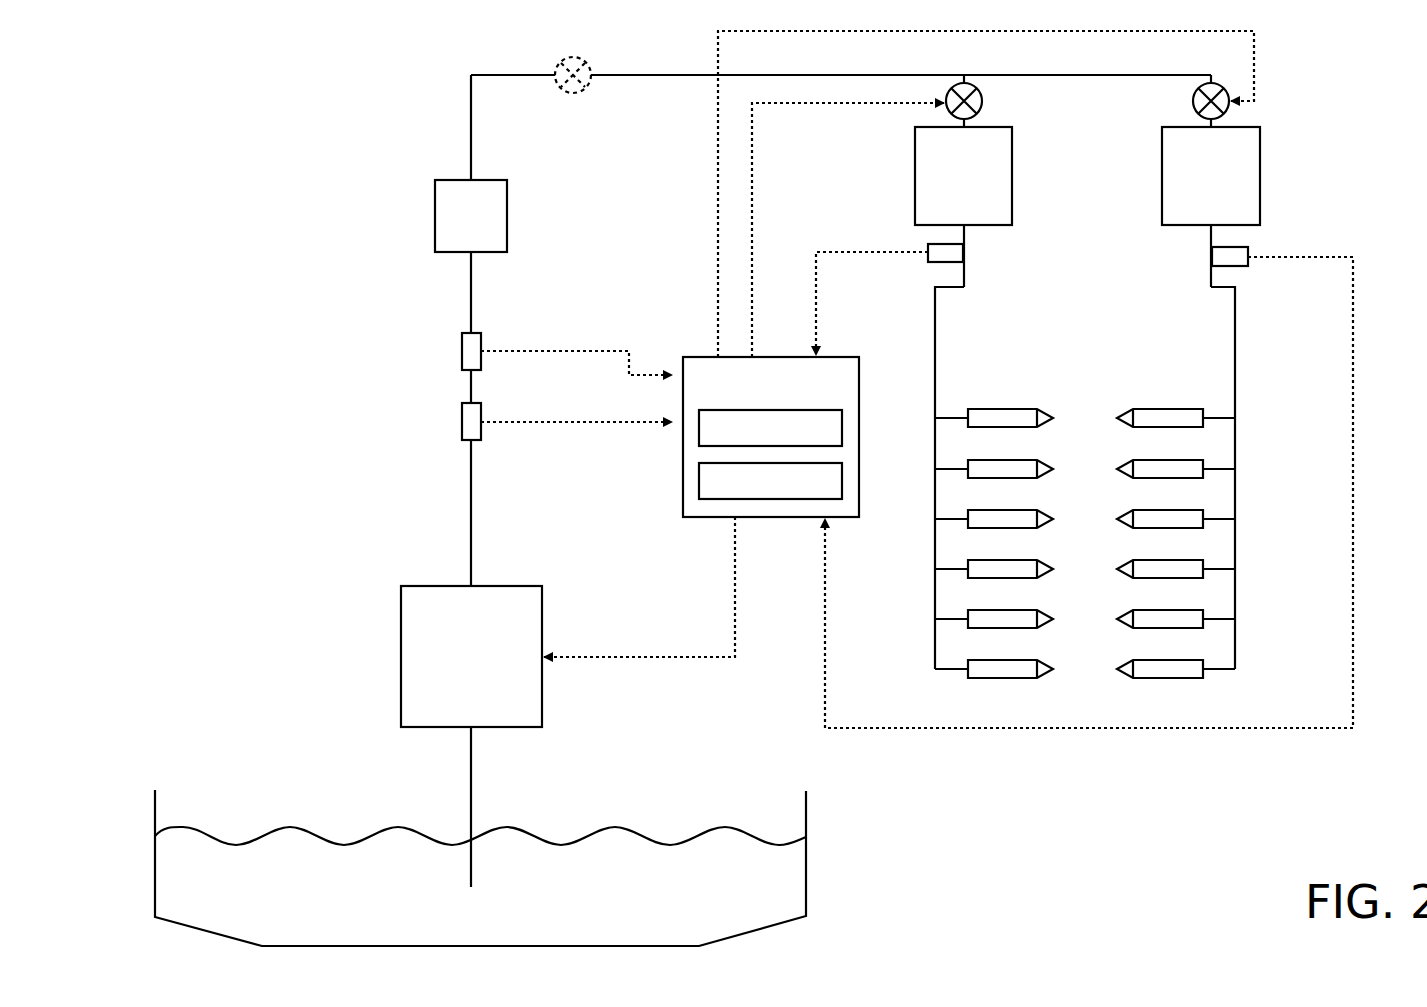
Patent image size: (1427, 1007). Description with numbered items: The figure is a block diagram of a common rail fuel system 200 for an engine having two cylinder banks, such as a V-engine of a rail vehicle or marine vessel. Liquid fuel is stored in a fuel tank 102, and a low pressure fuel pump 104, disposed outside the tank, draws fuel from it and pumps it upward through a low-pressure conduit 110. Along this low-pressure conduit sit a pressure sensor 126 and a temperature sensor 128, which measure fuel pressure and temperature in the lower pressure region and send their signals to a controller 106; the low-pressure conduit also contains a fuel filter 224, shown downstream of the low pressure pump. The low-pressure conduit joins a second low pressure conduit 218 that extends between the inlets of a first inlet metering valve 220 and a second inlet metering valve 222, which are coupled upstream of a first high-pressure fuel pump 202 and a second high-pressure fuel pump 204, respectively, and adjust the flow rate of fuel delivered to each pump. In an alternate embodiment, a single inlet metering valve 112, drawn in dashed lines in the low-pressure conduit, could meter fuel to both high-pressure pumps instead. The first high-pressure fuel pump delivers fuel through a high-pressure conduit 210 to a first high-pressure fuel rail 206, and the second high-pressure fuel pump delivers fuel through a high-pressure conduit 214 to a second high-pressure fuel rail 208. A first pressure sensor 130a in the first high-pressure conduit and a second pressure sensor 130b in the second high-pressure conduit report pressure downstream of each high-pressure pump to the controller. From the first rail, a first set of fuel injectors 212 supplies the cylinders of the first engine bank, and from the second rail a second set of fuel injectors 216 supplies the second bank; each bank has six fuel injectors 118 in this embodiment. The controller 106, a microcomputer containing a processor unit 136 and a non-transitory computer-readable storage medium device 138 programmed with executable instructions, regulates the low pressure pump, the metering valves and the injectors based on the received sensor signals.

The common rail fuel system 200 is at (1316, 90).
The fuel tank 102 is at (155, 870).
The low pressure fuel pump 104 is at (471, 656).
The controller 106 is at (948, 379).
The low-pressure conduit 110 is at (471, 532).
The single inlet metering valve 112 is at (576, 95).
The fuel injectors 118 is at (1015, 409).
The pressure sensor 126 is at (478, 403).
The temperature sensor 128 is at (478, 333).
The first pressure sensor 130a is at (930, 246).
The second pressure sensor 130b is at (1243, 249).
The processor unit 136 is at (770, 428).
The non-transitory computer-readable storage medium device 138 is at (770, 481).
The first high-pressure fuel pump 202 is at (963, 176).
The second high-pressure fuel pump 204 is at (1211, 176).
The first high-pressure fuel rail 206 is at (935, 358).
The second high-pressure fuel rail 208 is at (1235, 358).
The high-pressure conduit 210 is at (966, 272).
The first set of fuel injectors 212 is at (1005, 506).
The high-pressure conduit 214 is at (1208, 270).
The second set of fuel injectors 216 is at (1175, 409).
The second low pressure conduit 218 is at (1035, 75).
The first inlet metering valve 220 is at (982, 112).
The second inlet metering valve 222 is at (1196, 90).
The fuel filter 224 is at (471, 216).